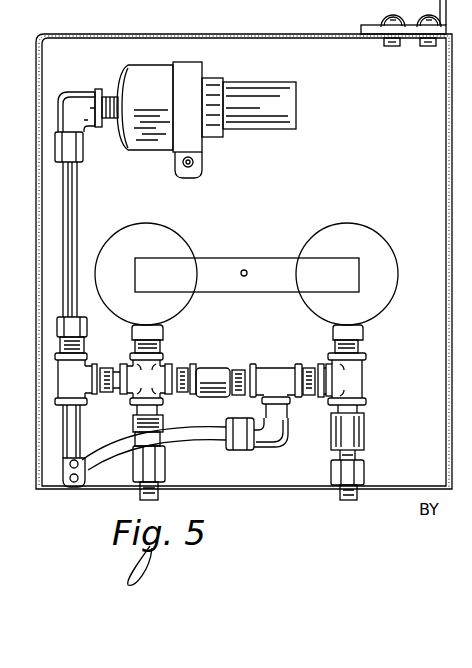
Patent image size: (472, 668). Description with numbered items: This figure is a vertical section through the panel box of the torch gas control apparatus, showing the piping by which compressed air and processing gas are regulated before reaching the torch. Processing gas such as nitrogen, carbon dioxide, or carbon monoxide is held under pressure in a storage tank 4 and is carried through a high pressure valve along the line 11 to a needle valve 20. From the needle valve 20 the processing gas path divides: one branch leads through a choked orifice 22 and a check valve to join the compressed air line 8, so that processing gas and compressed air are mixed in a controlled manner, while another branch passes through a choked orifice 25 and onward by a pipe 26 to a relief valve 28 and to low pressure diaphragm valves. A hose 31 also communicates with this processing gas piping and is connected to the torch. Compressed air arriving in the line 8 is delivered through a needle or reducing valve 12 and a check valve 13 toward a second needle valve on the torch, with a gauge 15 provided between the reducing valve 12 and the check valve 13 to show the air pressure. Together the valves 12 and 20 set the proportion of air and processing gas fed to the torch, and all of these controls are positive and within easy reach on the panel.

The storage tank 4 is at (436, 133).
The compressed air line 8 is at (348, 500).
The processing gas line 11 is at (160, 498).
The needle or reducing valve 12 is at (364, 425).
The check valve 13 is at (275, 372).
The gauge 15 is at (369, 237).
The needle valve 20 is at (164, 421).
The choked orifice 22 is at (207, 378).
The choked orifice 25 is at (82, 343).
The pipe 26 is at (70, 200).
The relief valve 28 is at (255, 127).
The hose 31 is at (209, 432).